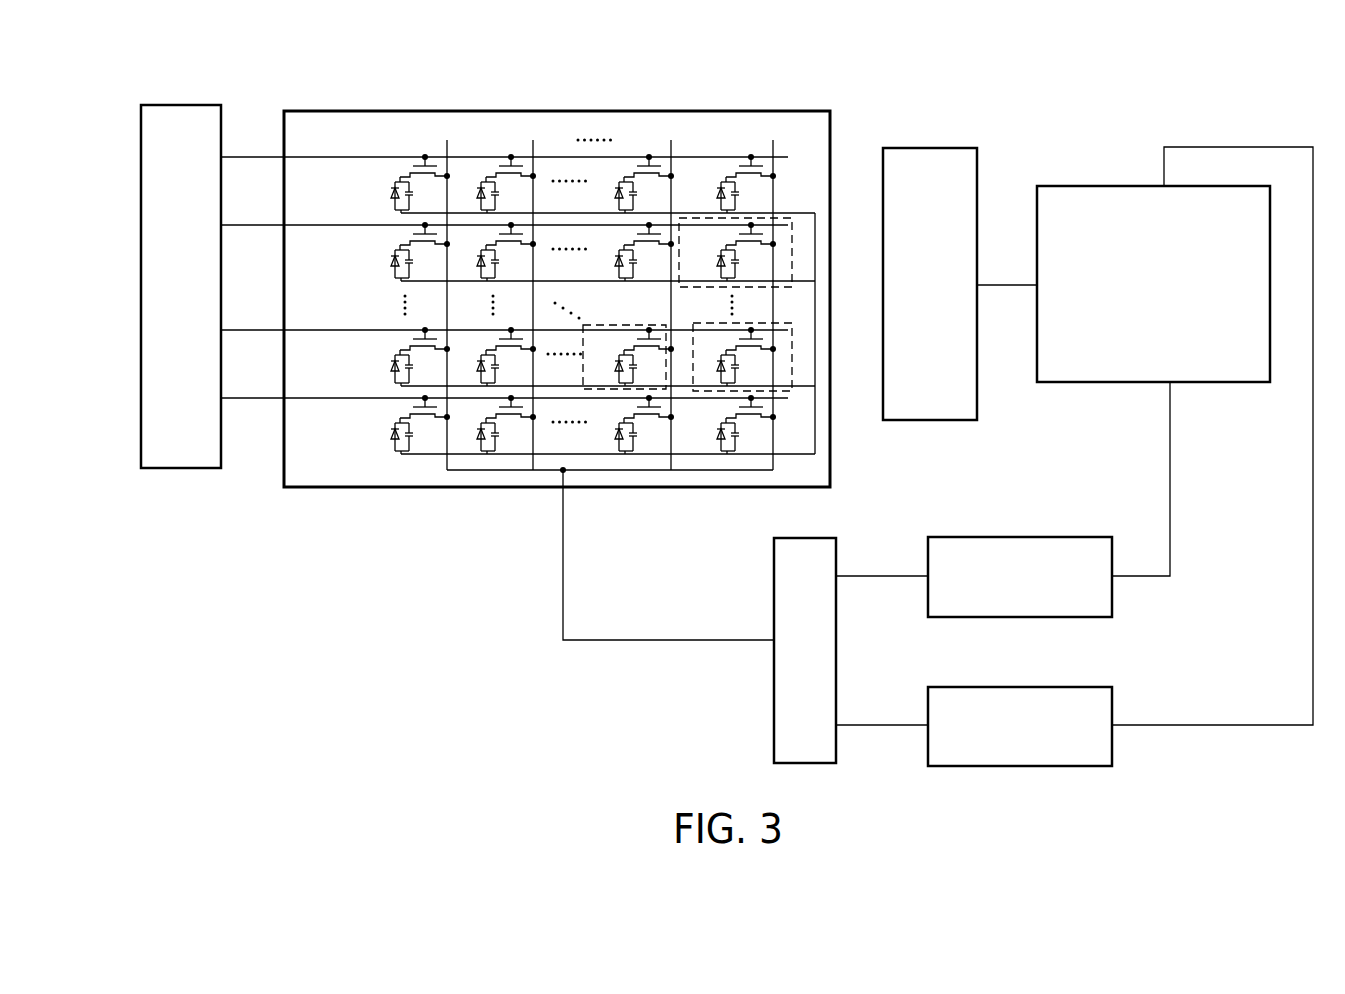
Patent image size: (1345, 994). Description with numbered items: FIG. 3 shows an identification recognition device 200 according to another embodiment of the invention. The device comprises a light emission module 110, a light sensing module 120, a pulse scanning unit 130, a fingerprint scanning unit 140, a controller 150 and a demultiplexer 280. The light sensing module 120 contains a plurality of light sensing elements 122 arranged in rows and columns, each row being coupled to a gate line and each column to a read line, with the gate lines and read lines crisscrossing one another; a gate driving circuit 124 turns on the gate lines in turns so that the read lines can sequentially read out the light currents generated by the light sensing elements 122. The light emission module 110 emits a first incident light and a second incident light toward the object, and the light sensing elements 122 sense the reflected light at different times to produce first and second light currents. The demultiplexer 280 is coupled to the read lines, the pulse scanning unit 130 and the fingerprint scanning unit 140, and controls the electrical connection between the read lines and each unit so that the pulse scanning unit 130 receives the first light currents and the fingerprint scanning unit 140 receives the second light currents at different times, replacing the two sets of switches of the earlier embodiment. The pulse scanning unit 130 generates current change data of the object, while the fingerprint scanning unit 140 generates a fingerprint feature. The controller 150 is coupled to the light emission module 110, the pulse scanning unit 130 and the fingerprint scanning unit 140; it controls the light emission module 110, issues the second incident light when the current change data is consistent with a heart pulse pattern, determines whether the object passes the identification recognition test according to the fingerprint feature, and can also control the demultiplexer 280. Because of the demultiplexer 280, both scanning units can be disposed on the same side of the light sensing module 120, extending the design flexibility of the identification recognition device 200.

The light emission module 110 is at (943, 148).
The light sensing module 120 is at (722, 111).
The light sensing element 122 is at (600, 325).
The gate driving circuit 124 is at (179, 104).
The pulse scanning unit 130 is at (1060, 537).
The fingerprint scanning unit 140 is at (1060, 687).
The controller 150 is at (1082, 186).
The identification recognition device 200 is at (1216, 110).
The demultiplexer 280 is at (823, 538).